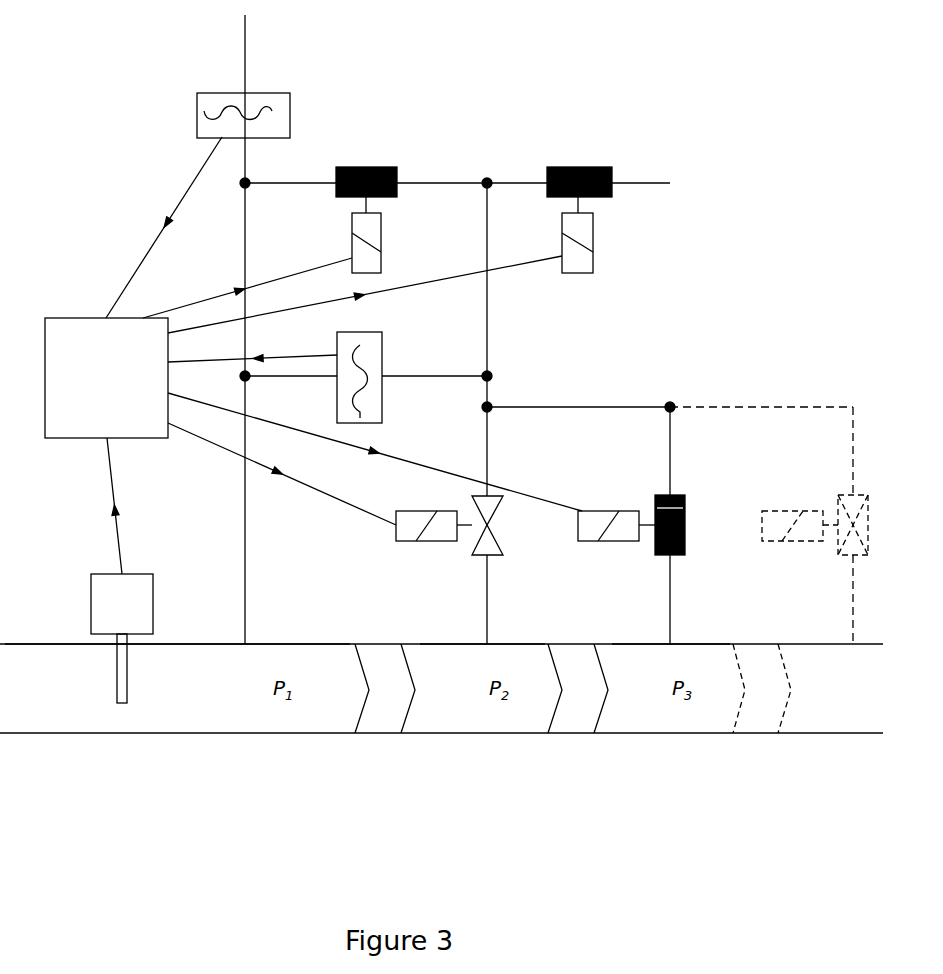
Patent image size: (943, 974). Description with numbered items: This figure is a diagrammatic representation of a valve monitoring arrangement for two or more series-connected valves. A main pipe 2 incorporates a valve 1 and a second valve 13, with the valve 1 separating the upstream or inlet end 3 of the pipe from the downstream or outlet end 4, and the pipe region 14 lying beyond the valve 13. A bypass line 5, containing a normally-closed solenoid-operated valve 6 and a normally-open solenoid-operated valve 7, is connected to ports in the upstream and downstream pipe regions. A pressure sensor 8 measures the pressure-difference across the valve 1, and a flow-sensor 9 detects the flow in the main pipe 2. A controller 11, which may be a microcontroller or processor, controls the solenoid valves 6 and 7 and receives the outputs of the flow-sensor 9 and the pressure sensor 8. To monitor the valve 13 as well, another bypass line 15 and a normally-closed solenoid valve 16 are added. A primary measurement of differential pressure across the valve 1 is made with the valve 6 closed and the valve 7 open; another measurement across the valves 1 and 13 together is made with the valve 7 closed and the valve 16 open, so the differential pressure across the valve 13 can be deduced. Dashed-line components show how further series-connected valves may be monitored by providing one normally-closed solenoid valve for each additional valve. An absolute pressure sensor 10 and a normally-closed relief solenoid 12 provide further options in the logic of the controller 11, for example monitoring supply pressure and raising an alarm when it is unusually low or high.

The valve 1 is at (385, 692).
The main pipe 2 is at (152, 735).
The upstream or inlet end 3 is at (215, 687).
The downstream or outlet end 4 is at (455, 687).
The bypass line 5 is at (480, 615).
The solenoid-operated valve 6 is at (370, 167).
The solenoid-operated valve 7 is at (505, 508).
The pressure sensor 8 is at (387, 363).
The flow-sensor 9 is at (103, 597).
The absolute pressure sensor 10 is at (188, 92).
The controller 11 is at (72, 332).
The relief solenoid 12 is at (585, 167).
The valve 13 is at (578, 687).
The third pipe section 14 is at (657, 687).
The bypass line 15 is at (663, 615).
The solenoid valve 16 is at (688, 507).